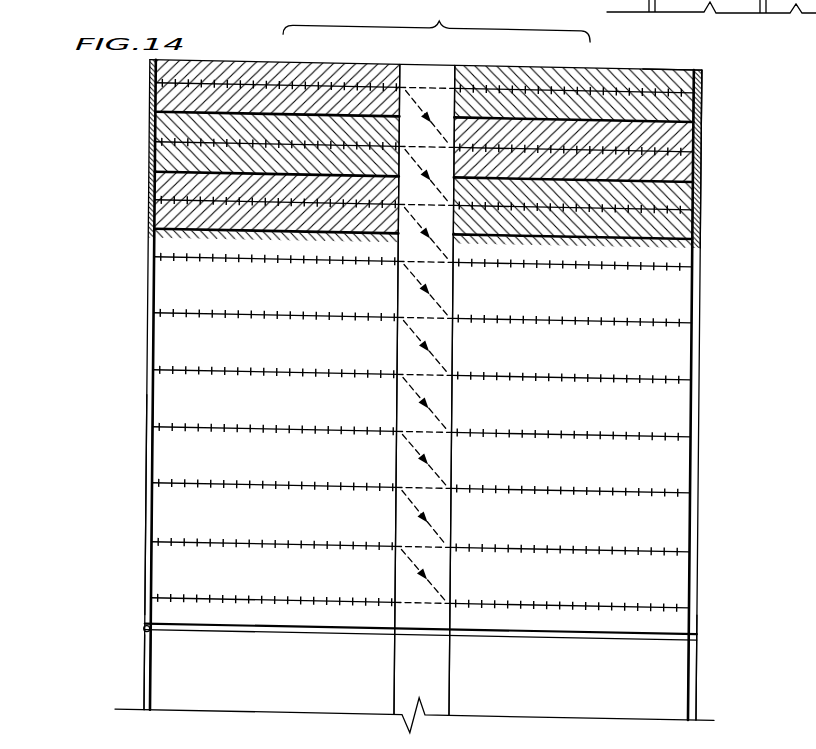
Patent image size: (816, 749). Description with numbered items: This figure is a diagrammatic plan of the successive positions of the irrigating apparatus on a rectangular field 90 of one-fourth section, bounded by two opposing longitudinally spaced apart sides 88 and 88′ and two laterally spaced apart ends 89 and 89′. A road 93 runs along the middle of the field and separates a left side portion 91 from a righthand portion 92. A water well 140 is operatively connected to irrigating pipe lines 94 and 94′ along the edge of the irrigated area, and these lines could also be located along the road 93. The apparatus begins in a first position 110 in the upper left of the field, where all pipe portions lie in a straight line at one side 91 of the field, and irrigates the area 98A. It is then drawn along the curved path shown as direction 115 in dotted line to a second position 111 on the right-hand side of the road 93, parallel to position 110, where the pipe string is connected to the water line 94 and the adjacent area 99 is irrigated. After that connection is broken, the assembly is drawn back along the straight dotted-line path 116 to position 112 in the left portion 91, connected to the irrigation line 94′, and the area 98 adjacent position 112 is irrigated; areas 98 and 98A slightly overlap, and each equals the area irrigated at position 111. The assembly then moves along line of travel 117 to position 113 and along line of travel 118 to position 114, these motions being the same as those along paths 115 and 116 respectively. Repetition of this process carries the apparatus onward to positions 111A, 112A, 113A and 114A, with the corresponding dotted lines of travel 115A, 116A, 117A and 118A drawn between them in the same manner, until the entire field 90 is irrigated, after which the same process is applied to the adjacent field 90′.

The side of the field 88 is at (148, 344).
The side of the field 88′ is at (698, 342).
The end of the field 89 is at (656, 62).
The end of the field 89′ is at (691, 634).
The field 90 is at (436, 21).
The adjacent field 90′ is at (138, 663).
The left side portion of the field 91 is at (312, 68).
The righthand portion of the field 92 is at (592, 70).
The road 93 is at (436, 76).
The water line 94 is at (695, 103).
The irrigation line 94′ is at (150, 463).
The area 98 is at (183, 164).
The area 98A is at (372, 82).
The area 99 is at (690, 162).
The first position 110 is at (167, 88).
The second position 111 is at (668, 147).
The position 111A is at (678, 258).
The position 112 is at (168, 144).
The position 112A is at (168, 259).
The position 113 is at (680, 203).
The position 113A is at (680, 315).
The position 114 is at (170, 200).
The position 114A is at (168, 316).
The direction of travel 115 is at (444, 129).
The flow passage 115A is at (441, 238).
The straight line path 116 is at (418, 145).
The cross opening 116A is at (420, 262).
The line of travel 117 is at (441, 180).
The flow passage 117A is at (440, 300).
The line of travel 118 is at (418, 202).
The cross opening 118A is at (422, 318).
The water well 140 is at (146, 632).